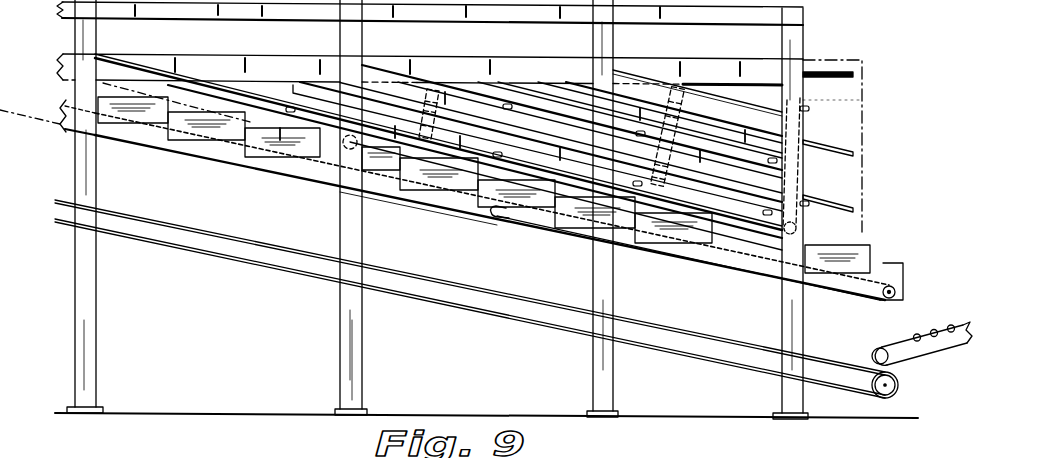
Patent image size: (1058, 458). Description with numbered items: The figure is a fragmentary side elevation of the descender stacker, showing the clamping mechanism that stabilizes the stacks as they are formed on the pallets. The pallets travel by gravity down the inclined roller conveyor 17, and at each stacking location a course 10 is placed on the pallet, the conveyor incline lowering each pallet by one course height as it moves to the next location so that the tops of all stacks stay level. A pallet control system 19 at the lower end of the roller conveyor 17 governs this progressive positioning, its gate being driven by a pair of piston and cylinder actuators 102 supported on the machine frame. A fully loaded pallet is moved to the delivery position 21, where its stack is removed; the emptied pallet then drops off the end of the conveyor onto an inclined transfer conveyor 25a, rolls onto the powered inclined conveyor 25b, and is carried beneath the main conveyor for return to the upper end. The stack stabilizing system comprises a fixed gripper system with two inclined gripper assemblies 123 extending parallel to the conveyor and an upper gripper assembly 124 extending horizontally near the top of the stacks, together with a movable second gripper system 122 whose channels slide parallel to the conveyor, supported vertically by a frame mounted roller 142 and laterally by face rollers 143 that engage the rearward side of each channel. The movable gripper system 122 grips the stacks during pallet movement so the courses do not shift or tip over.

The course 10 is at (277, 140).
The roller conveyor 17 is at (406, 198).
The pallet control system 19 is at (907, 282).
The delivery position 21 is at (880, 211).
The transfer conveyor 25a is at (932, 348).
The powered inclined conveyor 25b is at (500, 290).
The piston and cylinder actuator 102 is at (666, 252).
The gripper system 122 is at (728, 203).
The inclined gripper assembly 123 is at (764, 183).
The upper gripper assembly 124 is at (713, 70).
The frame mounted roller 142 is at (805, 223).
The face roller 143 is at (510, 104).